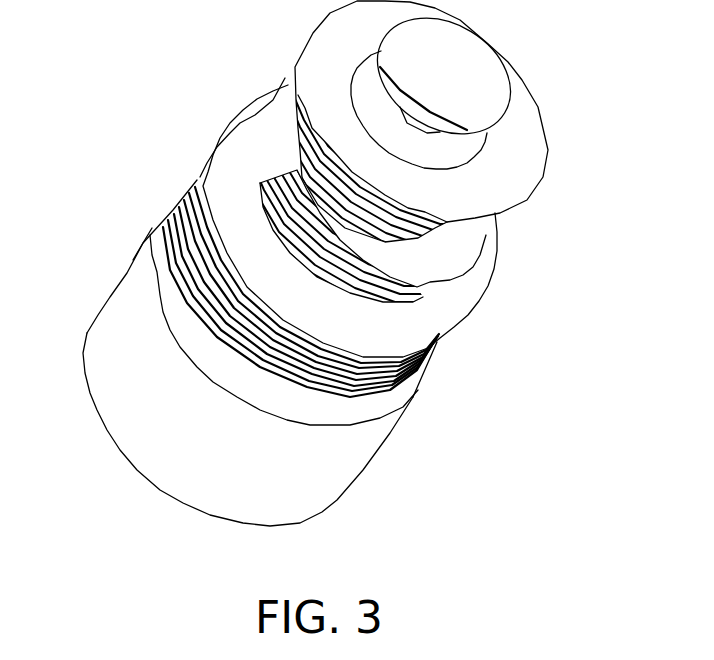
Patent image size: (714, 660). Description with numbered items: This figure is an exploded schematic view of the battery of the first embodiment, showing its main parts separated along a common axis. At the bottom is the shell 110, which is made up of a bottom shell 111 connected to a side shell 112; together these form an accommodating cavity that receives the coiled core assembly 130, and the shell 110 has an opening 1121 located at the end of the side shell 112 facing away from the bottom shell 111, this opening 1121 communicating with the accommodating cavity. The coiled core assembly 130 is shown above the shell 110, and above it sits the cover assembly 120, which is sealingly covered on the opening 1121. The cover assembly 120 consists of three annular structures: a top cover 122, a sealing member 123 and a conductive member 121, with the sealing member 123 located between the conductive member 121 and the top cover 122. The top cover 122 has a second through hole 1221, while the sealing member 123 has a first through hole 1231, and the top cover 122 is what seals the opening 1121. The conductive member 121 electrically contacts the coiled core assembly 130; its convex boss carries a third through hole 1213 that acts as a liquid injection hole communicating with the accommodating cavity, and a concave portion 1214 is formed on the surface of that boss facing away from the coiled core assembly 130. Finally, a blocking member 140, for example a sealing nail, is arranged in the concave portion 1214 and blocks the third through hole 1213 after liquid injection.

The shell 110 is at (107, 523).
The bottom shell 111 is at (155, 475).
The side shell 112 is at (132, 417).
The opening 1121 is at (142, 255).
The cover assembly 120 is at (233, 12).
The conductive member 121 is at (313, 50).
The third through hole 1213 is at (450, 147).
The concave portion 1214 is at (405, 147).
The top cover 122 is at (210, 140).
The second through hole 1221 is at (380, 307).
The sealing member 123 is at (273, 100).
The first through hole 1231 is at (405, 243).
The coiled core assembly 130 is at (427, 369).
The blocking member 140 is at (485, 78).